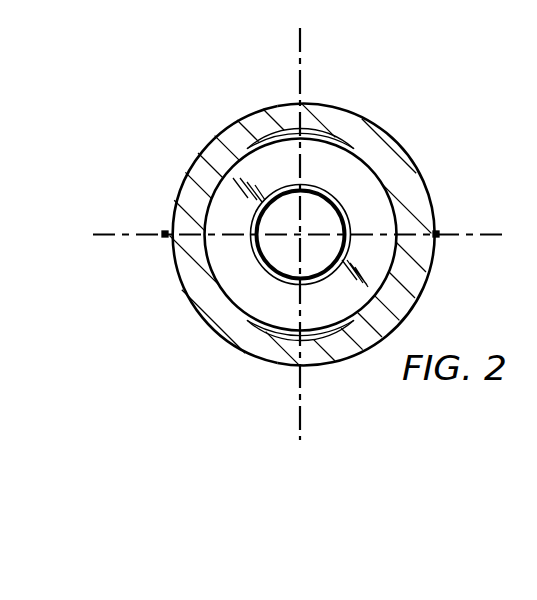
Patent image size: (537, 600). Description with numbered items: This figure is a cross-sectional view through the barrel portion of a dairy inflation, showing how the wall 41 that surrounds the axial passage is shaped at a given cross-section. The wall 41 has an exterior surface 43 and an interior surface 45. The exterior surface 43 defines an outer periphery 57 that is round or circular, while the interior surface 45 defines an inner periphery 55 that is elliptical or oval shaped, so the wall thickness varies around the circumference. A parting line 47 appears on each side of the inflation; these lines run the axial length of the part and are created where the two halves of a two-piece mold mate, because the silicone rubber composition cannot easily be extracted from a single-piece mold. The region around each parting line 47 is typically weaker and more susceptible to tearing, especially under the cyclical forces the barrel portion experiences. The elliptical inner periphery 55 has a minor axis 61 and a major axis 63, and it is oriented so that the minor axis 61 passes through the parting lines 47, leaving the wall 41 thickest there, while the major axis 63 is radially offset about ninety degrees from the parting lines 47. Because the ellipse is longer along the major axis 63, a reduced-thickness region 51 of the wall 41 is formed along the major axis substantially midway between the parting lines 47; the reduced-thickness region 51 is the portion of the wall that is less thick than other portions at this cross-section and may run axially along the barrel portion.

The wall 41 is at (228, 138).
The exterior surface 43 is at (341, 104).
The interior surface 45 is at (238, 309).
The parting line 47 is at (165, 232).
The reduced-thickness region 51 is at (287, 107).
The inner periphery 55 is at (382, 184).
The outer periphery 57 is at (184, 174).
The minor axis 61 is at (297, 46).
The major axis 63 is at (497, 237).